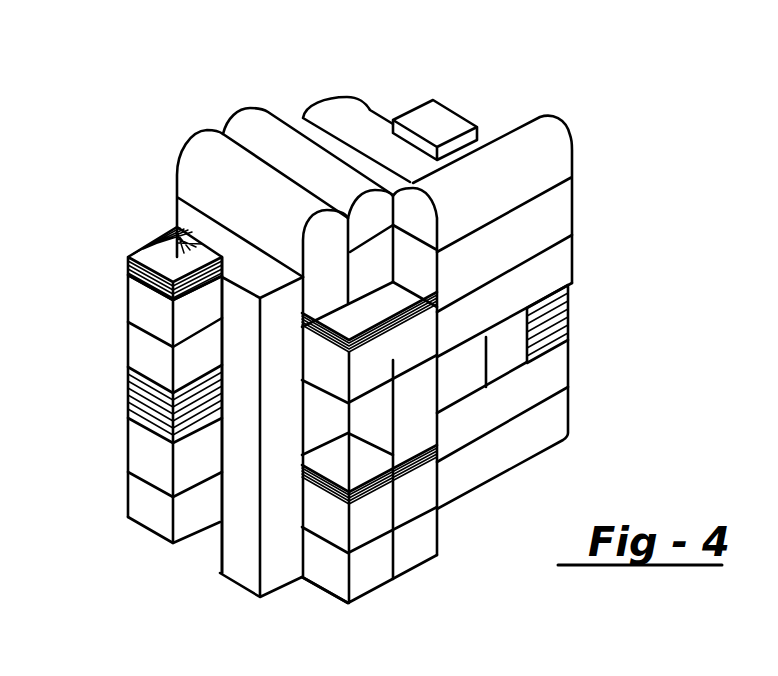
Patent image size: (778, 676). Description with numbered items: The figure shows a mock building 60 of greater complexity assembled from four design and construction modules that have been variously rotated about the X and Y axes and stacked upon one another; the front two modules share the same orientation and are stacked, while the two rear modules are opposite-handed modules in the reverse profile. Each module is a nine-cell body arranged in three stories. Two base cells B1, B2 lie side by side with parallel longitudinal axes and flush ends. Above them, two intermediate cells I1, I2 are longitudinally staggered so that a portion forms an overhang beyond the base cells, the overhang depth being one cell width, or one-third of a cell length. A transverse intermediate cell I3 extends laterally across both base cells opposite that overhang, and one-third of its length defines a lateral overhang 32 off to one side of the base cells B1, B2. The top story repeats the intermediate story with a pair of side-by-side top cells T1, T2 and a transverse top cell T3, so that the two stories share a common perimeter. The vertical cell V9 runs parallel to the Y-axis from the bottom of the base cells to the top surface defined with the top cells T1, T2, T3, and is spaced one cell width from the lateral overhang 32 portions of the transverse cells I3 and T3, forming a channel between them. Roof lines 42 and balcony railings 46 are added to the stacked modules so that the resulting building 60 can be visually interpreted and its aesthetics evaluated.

The mock building 60 is at (150, 162).
The roof lines 42 is at (200, 130).
The balcony railings 46 is at (128, 265).
The lateral overhang 32 is at (175, 240).
The top cell T1 is at (337, 118).
The top cell T2 is at (303, 127).
The transverse top cell T3 is at (143, 347).
The intermediate cell I1 is at (347, 533).
The intermediate cell I2 is at (420, 530).
The transverse intermediate cell I3 is at (143, 300).
The base cell B1 is at (197, 220).
The base cell B2 is at (323, 247).
The vertical cell V9 is at (437, 120).